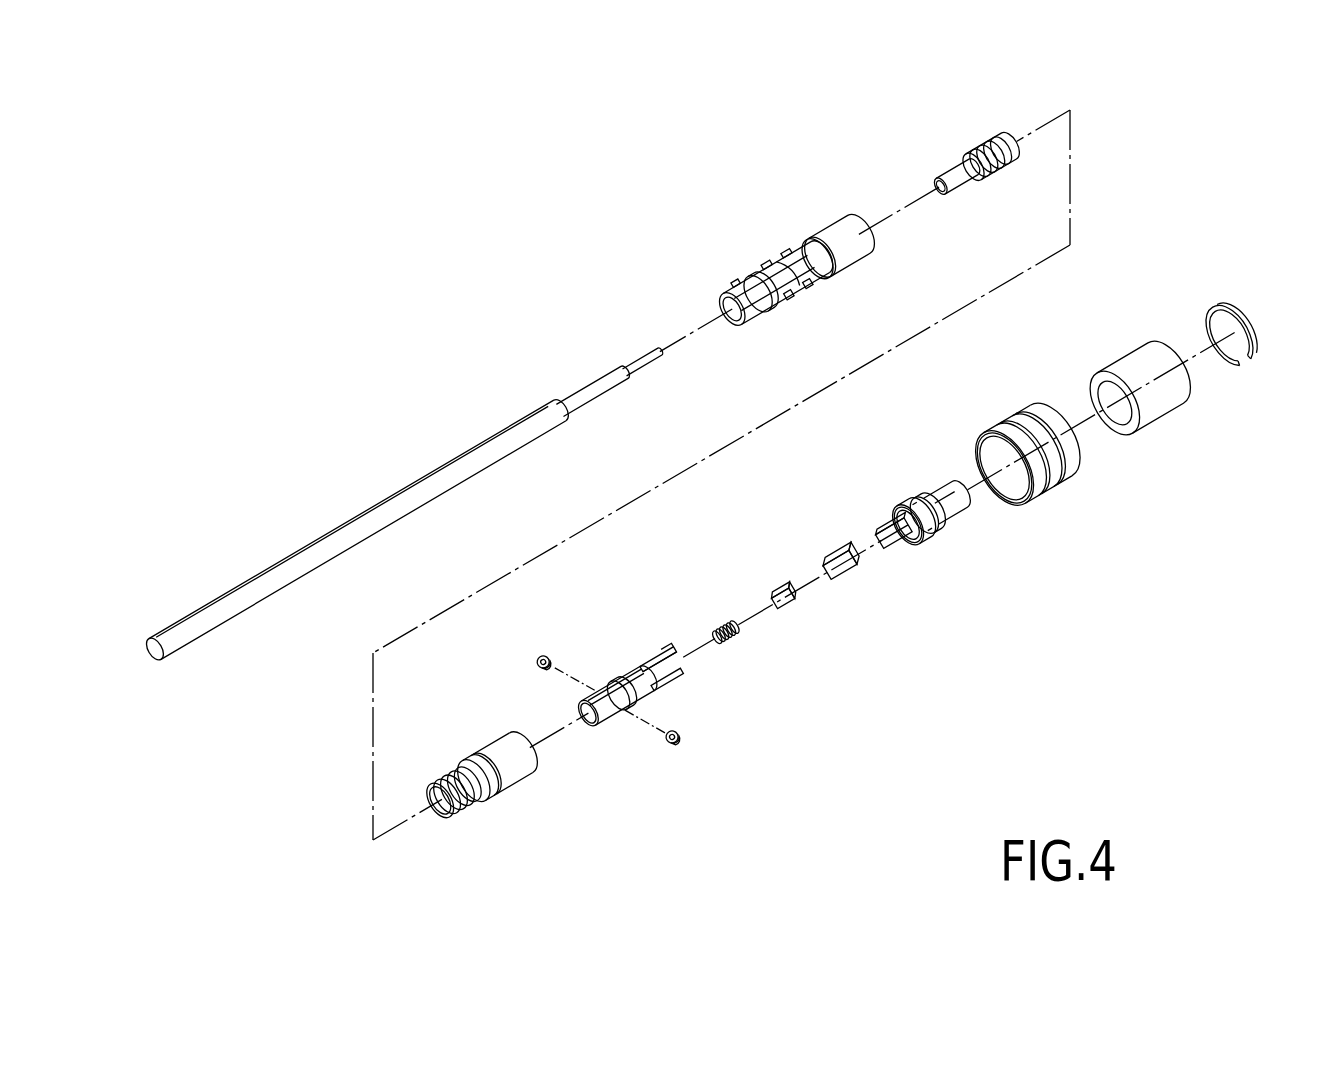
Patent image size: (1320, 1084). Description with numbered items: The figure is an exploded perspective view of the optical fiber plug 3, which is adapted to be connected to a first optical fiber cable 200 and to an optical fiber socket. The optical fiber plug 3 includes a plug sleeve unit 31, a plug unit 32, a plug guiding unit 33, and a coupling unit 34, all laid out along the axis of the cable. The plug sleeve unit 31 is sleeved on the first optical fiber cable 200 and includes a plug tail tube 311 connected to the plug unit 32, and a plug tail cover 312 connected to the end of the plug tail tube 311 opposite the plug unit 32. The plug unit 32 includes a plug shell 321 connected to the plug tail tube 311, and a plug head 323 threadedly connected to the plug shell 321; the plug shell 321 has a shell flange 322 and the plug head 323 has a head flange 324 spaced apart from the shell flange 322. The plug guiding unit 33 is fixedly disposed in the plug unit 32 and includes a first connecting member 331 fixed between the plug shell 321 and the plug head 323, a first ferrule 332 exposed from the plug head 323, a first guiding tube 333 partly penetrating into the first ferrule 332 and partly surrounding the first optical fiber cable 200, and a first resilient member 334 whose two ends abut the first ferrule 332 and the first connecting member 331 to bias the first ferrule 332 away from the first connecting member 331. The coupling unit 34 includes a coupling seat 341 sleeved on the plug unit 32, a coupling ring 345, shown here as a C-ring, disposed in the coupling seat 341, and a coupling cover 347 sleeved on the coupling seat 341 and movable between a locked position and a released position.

The first optical fiber cable 200 is at (303, 550).
The optical fiber plug 3 is at (838, 698).
The plug sleeve unit 31 is at (890, 177).
The plug tail tube 311 is at (975, 150).
The plug tail cover 312 is at (833, 228).
The plug unit 32 is at (953, 548).
The plug shell 321 is at (460, 753).
The shell flange 322 is at (513, 783).
The plug head 323 is at (903, 490).
The head flange 324 is at (903, 493).
The plug guiding unit 33 is at (643, 753).
The first connecting member 331 is at (623, 673).
The first ferrule 332 is at (850, 572).
The first guiding tube 333 is at (787, 603).
The first resilient member 334 is at (723, 623).
The coupling unit 34 is at (1120, 528).
The coupling seat 341 is at (1162, 428).
The coupling ring 345 is at (1208, 302).
The coupling cover 347 is at (1052, 505).